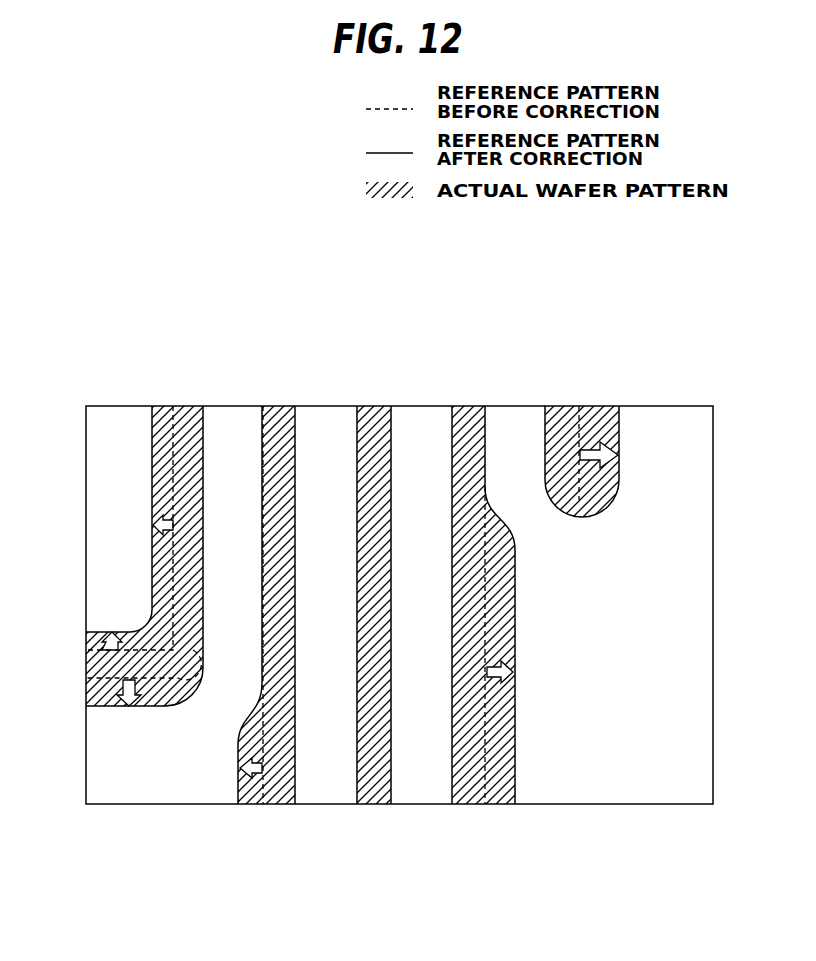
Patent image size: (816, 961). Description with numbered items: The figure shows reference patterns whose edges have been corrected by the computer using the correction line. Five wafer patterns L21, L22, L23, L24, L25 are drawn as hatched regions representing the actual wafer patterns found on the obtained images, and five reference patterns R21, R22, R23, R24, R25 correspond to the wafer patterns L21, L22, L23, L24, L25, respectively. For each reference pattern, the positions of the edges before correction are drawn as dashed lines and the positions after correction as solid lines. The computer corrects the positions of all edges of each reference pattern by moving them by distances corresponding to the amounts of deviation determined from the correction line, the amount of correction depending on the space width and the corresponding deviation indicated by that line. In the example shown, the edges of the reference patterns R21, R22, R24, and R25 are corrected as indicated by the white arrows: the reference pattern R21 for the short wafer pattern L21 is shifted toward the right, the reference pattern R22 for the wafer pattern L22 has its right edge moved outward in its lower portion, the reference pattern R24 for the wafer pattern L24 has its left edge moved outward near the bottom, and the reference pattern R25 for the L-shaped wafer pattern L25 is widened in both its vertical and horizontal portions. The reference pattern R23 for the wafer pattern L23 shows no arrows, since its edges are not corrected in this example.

The reference pattern R21 is at (545, 440).
The reference pattern R22 is at (452, 438).
The reference pattern R23 is at (358, 438).
The reference pattern R24 is at (262, 440).
The reference pattern R25 is at (207, 432).
The wafer pattern L21 is at (560, 430).
The wafer pattern L22 is at (476, 785).
The wafer pattern L23 is at (379, 785).
The wafer pattern L24 is at (284, 785).
The wafer pattern L25 is at (162, 598).